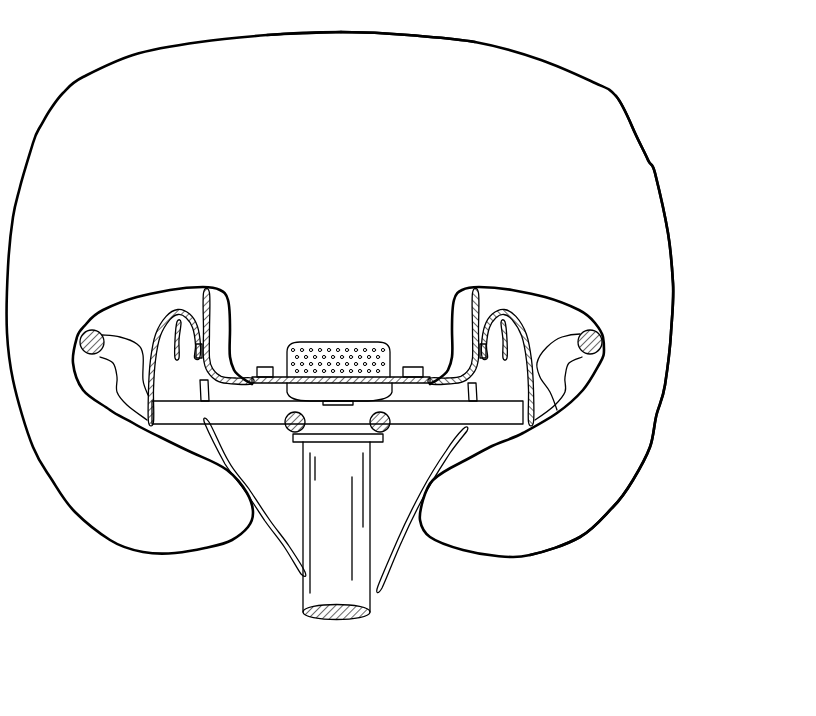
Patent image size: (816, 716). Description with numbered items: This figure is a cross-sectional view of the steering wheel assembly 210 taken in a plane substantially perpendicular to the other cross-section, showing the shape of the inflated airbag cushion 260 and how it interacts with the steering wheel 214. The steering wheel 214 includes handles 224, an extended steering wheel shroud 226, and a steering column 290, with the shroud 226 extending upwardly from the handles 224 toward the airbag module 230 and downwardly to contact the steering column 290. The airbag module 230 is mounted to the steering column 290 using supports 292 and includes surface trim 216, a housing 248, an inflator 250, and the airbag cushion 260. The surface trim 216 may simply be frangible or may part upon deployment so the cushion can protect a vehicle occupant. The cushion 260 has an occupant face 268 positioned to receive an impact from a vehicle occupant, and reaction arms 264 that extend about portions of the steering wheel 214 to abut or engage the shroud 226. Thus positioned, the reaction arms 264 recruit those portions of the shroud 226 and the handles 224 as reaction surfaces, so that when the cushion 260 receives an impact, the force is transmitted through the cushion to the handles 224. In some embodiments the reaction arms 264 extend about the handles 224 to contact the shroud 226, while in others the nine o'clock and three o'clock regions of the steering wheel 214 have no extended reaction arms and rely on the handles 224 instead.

The steering wheel assembly 210 is at (604, 58).
The airbag cushion 260 is at (615, 90).
The occupant face 268 is at (462, 34).
The airbag module 230 is at (685, 271).
The housing 248 is at (480, 304).
The handles 224 is at (86, 328).
The surface trim 216 is at (560, 411).
The steering wheel shroud 226 is at (368, 397).
The supports 292 is at (417, 393).
The inflator 250 is at (385, 415).
The reaction arms 264 is at (409, 539).
The steering column 290 is at (347, 567).
The steering wheel 214 is at (292, 470).